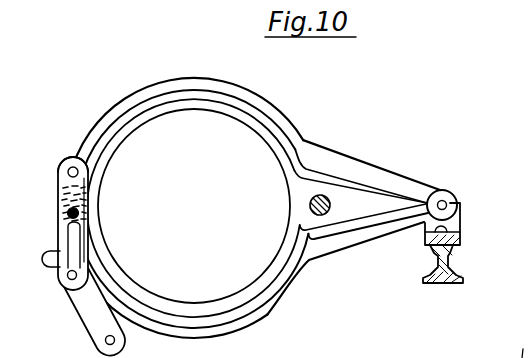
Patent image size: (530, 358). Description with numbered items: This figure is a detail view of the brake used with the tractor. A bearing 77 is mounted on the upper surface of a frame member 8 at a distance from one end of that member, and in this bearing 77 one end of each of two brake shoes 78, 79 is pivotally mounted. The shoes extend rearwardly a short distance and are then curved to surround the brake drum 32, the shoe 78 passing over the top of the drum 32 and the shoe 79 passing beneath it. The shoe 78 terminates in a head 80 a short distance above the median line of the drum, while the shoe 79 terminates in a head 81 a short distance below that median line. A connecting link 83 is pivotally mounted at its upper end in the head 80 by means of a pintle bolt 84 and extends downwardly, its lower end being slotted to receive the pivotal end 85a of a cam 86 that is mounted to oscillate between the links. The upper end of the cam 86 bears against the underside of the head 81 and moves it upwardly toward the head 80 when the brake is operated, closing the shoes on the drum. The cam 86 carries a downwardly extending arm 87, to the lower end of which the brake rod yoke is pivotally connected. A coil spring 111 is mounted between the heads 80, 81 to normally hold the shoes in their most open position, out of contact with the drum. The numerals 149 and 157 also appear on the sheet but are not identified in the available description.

The member 8 is at (451, 258).
The brake drum 32 is at (252, 294).
The bearing 77 is at (461, 226).
The brake shoe 78 is at (377, 167).
The brake shoe 79 is at (388, 237).
The head 80 is at (58, 173).
The head 81 is at (74, 240).
The connecting link 83 is at (57, 215).
The pintle bolt 84 is at (90, 172).
The pivotal end of cam 85a is at (68, 280).
The cam 86 is at (56, 268).
The arm 87 is at (96, 329).
The coil spring 111 is at (82, 197).
The part (partially shown) 149 is at (222, 351).
The part (partially shown) 157 is at (235, 351).